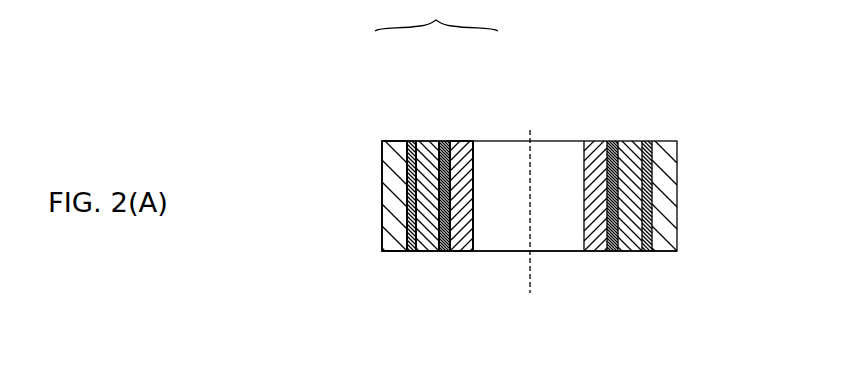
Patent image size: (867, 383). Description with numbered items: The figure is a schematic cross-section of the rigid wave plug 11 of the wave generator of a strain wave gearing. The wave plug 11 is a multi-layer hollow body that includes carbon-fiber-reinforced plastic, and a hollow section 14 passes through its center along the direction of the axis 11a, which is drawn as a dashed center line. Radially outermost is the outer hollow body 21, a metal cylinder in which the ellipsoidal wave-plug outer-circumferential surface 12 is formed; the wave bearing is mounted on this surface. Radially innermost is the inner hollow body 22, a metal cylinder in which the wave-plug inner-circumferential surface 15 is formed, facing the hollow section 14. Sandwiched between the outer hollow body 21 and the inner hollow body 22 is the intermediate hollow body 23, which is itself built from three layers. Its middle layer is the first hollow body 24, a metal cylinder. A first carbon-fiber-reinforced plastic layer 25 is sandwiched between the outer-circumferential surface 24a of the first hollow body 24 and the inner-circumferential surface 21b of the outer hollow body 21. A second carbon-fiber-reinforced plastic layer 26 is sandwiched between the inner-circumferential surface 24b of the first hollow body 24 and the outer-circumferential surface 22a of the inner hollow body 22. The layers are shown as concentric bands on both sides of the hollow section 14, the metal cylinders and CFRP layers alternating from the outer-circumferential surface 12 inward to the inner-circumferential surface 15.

The wave plug 11 is at (639, 91).
The axis 11a is at (532, 270).
The wave-plug outer-circumferential surface 12 is at (382, 208).
The hollow section 14 is at (570, 212).
The wave-plug inner-circumferential surface 15 is at (480, 217).
The outer hollow body 21 is at (393, 251).
The inner-circumferential surface of the outer hollow body 21b is at (410, 185).
The inner hollow body 22 is at (455, 251).
The outer-circumferential surface of the inner hollow body 22a is at (482, 162).
The intermediate hollow body 23 is at (436, 15).
The first hollow body 24 is at (430, 141).
The outer-circumferential surface of the first hollow body 24a is at (412, 166).
The inner-circumferential surface of the first hollow body 24b is at (475, 141).
The first carbon-fiber-reinforced plastic layer 25 is at (412, 141).
The second carbon-fiber-reinforced plastic layer 26 is at (447, 141).